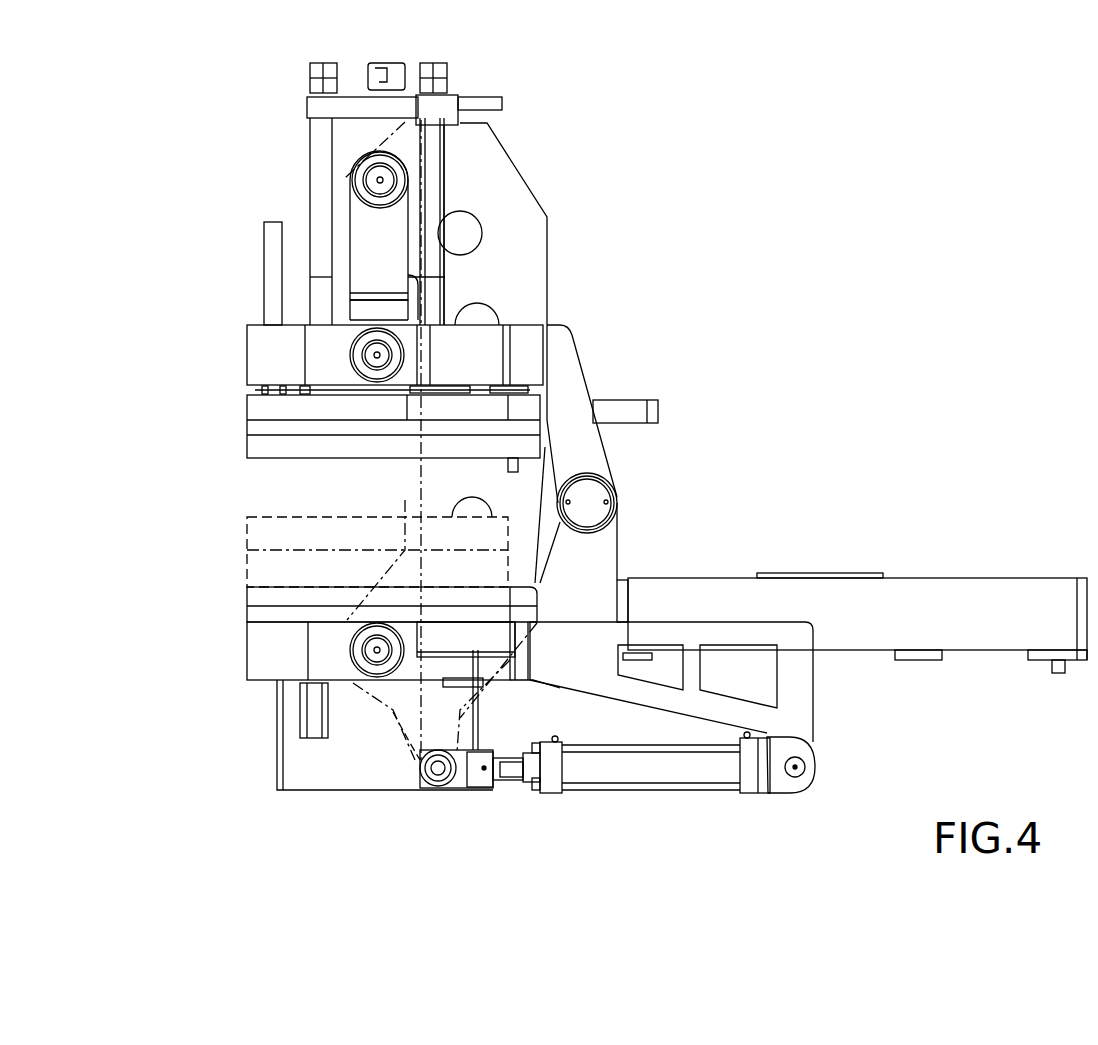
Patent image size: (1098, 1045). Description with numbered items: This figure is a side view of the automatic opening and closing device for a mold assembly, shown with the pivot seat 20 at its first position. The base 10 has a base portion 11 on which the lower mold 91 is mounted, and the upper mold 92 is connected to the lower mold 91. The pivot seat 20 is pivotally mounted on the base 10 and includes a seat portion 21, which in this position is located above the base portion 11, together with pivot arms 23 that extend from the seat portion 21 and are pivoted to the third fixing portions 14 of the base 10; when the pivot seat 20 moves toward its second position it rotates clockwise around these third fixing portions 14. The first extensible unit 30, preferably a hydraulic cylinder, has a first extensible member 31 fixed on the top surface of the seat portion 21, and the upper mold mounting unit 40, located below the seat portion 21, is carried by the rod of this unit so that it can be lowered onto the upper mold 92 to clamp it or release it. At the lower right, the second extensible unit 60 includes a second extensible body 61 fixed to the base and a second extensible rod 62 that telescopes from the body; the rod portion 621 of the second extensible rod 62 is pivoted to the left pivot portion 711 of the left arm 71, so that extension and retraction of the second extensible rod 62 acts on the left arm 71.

The base 10 is at (240, 643).
The base portion 11 is at (262, 585).
The third fixing portion 14 is at (600, 555).
The pivot seat 20 is at (762, 458).
The seat portion 21 is at (253, 347).
The pivot arm 23 is at (578, 403).
The first extensible unit 30 is at (303, 113).
The first extensible member 31 is at (348, 163).
The upper mold mounting unit 40 is at (245, 425).
The second extensible unit 60 is at (595, 807).
The second extensible body 61 is at (627, 772).
The second extensible rod 62 is at (515, 768).
The rod portion 621 is at (457, 778).
The left arm 71 is at (413, 487).
The left pivot portion 711 is at (417, 760).
The lower mold 91 is at (255, 568).
The upper mold 92 is at (268, 525).